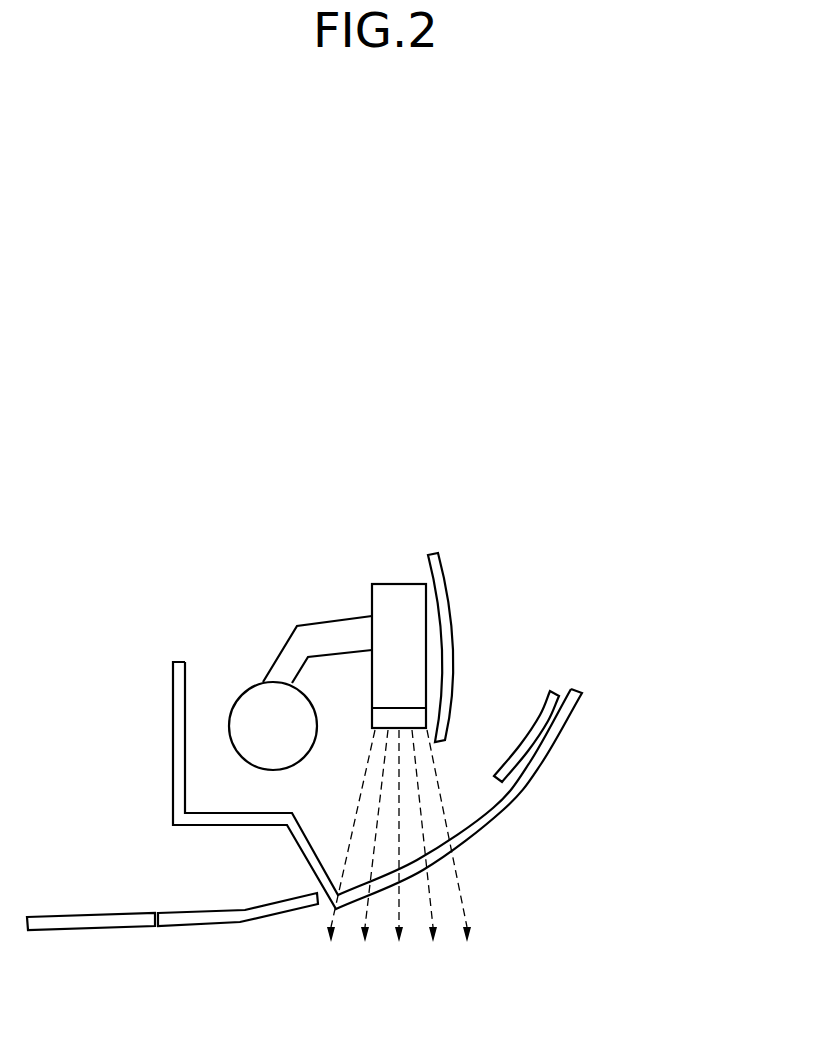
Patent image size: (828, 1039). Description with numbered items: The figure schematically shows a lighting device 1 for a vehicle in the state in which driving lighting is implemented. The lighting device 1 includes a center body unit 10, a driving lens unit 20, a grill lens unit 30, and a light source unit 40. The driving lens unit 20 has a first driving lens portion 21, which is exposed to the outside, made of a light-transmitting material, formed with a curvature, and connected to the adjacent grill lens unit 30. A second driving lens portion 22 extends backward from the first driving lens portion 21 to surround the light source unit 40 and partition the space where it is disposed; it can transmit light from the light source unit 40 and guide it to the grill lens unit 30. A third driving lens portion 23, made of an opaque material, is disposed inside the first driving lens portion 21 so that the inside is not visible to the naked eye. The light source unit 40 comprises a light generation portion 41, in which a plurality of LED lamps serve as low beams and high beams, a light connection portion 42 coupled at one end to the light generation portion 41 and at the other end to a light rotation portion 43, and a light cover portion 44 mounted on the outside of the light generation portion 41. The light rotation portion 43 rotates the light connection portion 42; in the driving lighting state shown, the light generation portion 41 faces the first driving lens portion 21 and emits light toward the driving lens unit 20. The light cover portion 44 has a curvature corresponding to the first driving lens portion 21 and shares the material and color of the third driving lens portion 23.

The lighting device for a vehicle 1 is at (676, 307).
The center body unit 10 is at (85, 928).
The driving lens unit 20 is at (655, 697).
The first driving lens portion 21 is at (480, 830).
The second driving lens portion 22 is at (307, 852).
The third driving lens portion 23 is at (537, 723).
The grill lens unit 30 is at (217, 925).
The light source unit 40 is at (213, 448).
The light generation portion 41 is at (397, 597).
The light connection portion 42 is at (317, 630).
The light rotation portion 43 is at (248, 707).
The light cover portion 44 is at (436, 553).